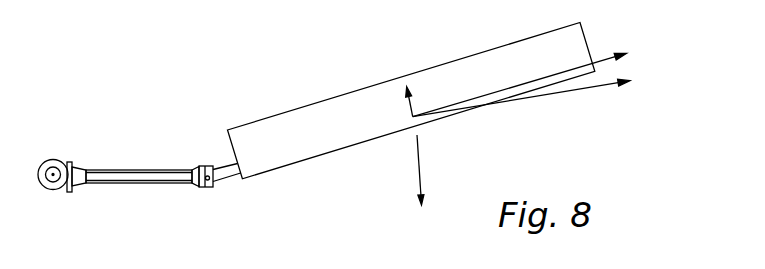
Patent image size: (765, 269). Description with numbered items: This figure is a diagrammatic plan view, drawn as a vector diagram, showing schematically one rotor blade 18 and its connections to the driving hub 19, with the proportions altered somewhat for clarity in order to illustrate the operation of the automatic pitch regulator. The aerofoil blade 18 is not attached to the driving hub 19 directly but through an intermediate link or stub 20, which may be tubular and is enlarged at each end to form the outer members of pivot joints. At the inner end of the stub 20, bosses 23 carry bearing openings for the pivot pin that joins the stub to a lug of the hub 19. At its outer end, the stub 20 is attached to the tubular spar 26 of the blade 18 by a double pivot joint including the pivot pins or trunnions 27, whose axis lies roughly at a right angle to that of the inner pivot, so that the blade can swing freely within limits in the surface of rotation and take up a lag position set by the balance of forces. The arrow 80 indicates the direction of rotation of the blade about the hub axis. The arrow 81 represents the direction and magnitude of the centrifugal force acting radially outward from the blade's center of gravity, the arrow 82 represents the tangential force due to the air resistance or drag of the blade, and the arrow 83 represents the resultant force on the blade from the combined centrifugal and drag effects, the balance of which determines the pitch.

The aerofoil blade 18 is at (411, 101).
The driving hub 19 is at (52, 189).
The intermediate link or stub 20 is at (152, 179).
The bosses 23 is at (72, 162).
The tubular spar 26 is at (230, 179).
The pivot pins or trunnions 27 is at (203, 166).
The arrow indicating direction of rotation 80 is at (412, 170).
The arrow representing centrifugal force 81 is at (533, 95).
The arrow representing tangential drag force 82 is at (419, 102).
The arrow representing resultant force 83 is at (532, 80).